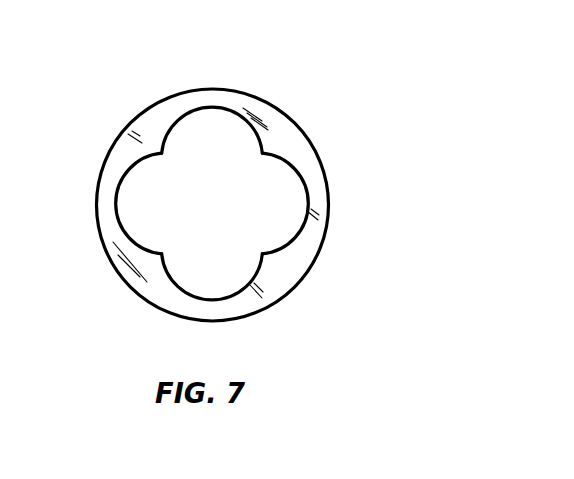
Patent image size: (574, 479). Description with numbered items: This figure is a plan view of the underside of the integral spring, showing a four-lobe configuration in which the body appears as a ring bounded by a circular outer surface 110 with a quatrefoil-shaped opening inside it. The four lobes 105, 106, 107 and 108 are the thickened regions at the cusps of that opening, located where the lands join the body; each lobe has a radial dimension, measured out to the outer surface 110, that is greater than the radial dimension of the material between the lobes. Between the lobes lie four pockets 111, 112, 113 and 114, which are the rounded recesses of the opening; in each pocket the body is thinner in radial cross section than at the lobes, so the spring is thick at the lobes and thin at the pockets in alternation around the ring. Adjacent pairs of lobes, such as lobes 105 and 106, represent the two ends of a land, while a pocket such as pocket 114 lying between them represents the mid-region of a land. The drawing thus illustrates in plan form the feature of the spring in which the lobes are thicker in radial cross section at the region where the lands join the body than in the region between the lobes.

The lobe 105 is at (262, 154).
The lobe 106 is at (162, 154).
The lobe 107 is at (161, 256).
The lobe 108 is at (264, 258).
The outer surface 110 is at (322, 165).
The pocket 111 is at (308, 204).
The pocket 112 is at (216, 300).
The pocket 113 is at (116, 205).
The pocket 114 is at (217, 106).